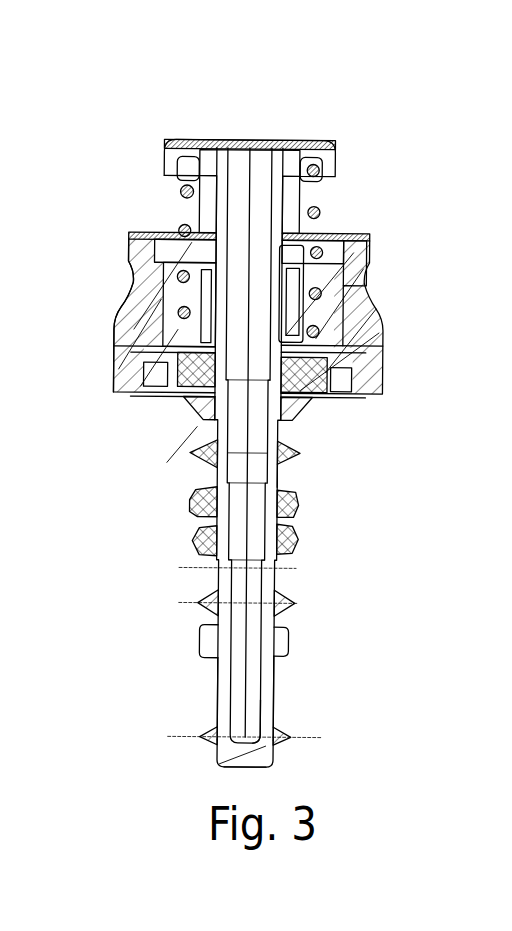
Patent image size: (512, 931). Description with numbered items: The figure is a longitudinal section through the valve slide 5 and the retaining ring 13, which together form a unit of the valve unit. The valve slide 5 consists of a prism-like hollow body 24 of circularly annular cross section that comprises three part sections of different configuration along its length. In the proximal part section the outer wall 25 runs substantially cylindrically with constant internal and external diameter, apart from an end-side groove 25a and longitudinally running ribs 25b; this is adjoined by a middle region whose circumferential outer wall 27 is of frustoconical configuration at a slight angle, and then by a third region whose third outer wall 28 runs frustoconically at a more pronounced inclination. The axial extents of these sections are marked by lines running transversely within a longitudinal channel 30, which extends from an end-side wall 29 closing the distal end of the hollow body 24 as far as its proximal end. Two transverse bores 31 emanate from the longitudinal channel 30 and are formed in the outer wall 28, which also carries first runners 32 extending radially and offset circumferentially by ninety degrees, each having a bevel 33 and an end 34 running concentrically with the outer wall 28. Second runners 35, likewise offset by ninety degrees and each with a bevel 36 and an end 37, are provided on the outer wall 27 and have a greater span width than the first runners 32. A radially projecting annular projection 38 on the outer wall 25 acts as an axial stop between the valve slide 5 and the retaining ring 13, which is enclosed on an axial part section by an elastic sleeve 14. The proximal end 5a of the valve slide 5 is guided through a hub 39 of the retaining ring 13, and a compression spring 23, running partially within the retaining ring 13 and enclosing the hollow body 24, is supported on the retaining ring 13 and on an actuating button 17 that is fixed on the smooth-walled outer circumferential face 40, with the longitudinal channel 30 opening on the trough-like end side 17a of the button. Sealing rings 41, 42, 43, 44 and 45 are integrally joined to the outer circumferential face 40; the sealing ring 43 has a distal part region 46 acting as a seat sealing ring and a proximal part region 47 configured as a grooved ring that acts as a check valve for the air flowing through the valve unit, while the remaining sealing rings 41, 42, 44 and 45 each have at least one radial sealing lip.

The valve slide 5 is at (203, 476).
The proximal end 5a is at (177, 230).
The retaining ring 13 is at (380, 287).
The elastic sleeve 14 is at (387, 378).
The actuating button 17 is at (320, 140).
The end side 17a is at (217, 140).
The compression spring 23 is at (130, 273).
The hollow body 24 is at (274, 710).
The outer wall 25 is at (327, 220).
The end-side groove 25a is at (337, 170).
The longitudinally running ribs 25b is at (183, 193).
The circumferential outer wall 27 is at (292, 443).
The third outer wall 28 is at (200, 730).
The end-side wall 29 is at (213, 753).
The longitudinal channel 30 is at (188, 453).
The transverse bores 31 is at (198, 605).
The first runners 32 is at (200, 643).
The bevel 33 is at (208, 667).
The end 34 is at (199, 628).
The second runners 35 is at (185, 400).
The bevel 36 is at (193, 420).
The end 37 is at (175, 397).
The annular projection 38 is at (120, 343).
The hub 39 is at (370, 247).
The outer circumferential face 40 is at (167, 175).
The sealing ring 41 is at (288, 740).
The sealing ring 42 is at (296, 602).
The sealing ring 43 is at (297, 525).
The sealing ring 44 is at (288, 462).
The sealing ring 45 is at (380, 343).
The distal part region 46 is at (290, 548).
The proximal part region 47 is at (297, 495).